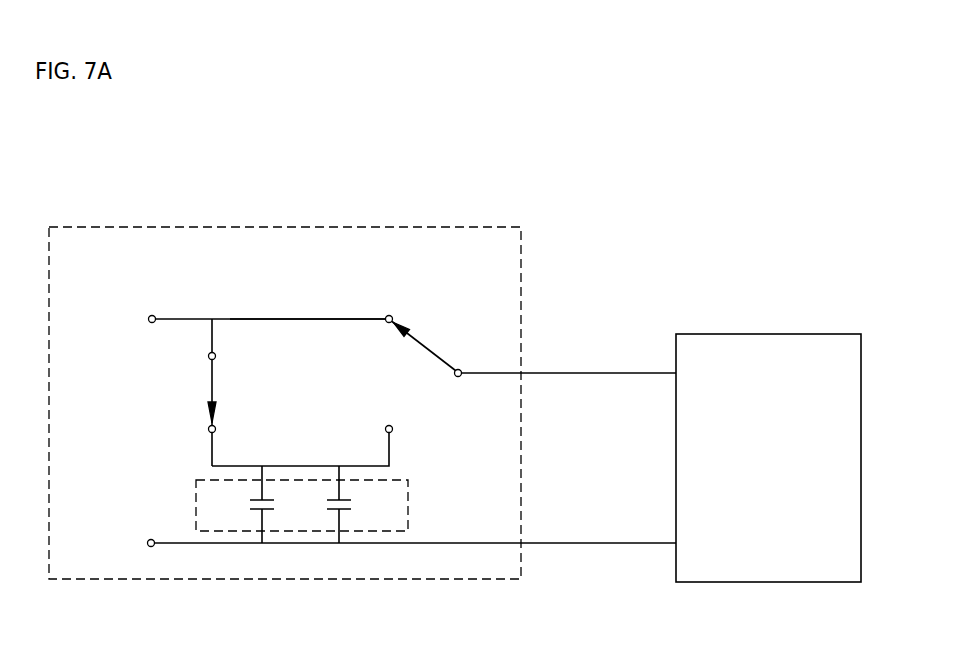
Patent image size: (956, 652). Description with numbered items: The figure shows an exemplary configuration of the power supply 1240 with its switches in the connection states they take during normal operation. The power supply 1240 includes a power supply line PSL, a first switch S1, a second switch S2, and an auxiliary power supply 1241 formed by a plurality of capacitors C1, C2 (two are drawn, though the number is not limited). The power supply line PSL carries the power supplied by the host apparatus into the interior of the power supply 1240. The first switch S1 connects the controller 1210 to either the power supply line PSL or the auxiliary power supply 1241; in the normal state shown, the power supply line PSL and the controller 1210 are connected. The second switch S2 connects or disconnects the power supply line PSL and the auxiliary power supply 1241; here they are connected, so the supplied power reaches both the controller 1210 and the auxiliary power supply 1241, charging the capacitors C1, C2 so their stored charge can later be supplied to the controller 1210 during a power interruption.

The power supply 1240 is at (432, 226).
The auxiliary power supply 1241 is at (411, 500).
The controller 1210 is at (767, 333).
The power supply line PSL is at (303, 318).
The first switch S1 is at (426, 346).
The second switch S2 is at (193, 392).
The capacitor C1 is at (243, 504).
The capacitor C2 is at (357, 504).